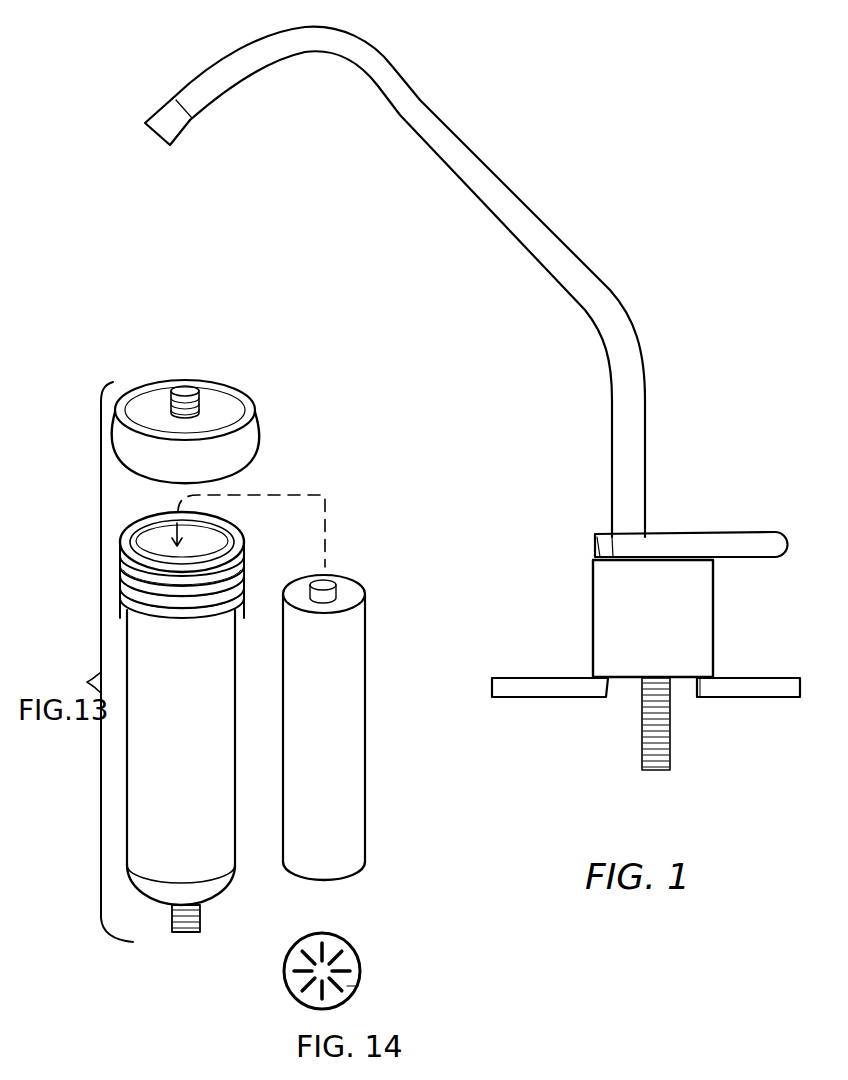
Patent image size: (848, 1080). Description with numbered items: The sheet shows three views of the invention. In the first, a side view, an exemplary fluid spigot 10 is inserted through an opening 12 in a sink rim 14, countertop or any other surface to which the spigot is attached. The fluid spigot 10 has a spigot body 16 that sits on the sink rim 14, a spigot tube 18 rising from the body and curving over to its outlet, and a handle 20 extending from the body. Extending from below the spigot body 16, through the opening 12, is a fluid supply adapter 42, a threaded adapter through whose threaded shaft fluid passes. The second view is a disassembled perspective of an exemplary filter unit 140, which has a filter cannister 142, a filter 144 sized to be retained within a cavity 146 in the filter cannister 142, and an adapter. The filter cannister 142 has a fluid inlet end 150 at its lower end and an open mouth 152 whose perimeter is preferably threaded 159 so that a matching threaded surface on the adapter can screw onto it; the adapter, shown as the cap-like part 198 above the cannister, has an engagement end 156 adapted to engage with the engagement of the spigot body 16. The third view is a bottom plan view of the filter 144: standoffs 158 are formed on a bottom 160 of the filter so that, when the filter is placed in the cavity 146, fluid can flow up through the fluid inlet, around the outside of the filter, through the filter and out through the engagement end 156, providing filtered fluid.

In FIG. 1, the fluid spigot 10 is at (474, 409).
In FIG. 1, the opening 12 is at (692, 707).
In FIG. 1, the sink rim 14 is at (533, 677).
In FIG. 1, the spigot body 16 is at (700, 613).
In FIG. 1, the spigot tube 18 is at (620, 335).
In FIG. 1, the handle 20 is at (705, 545).
In FIG. 1, the fluid supply adapter 42 is at (670, 760).
In FIG. 13, the filter unit 140 is at (84, 662).
In FIG. 13, the filter cannister 142 is at (160, 770).
In FIG. 13, the filter 144 is at (320, 797).
In FIG. 14, the filter 144 is at (276, 992).
In FIG. 13, the cavity 146 is at (215, 545).
In FIG. 13, the fluid inlet end 150 is at (182, 932).
In FIG. 13, the open mouth 152 is at (153, 543).
In FIG. 13, the engagement end 156 is at (203, 397).
In FIG. 14, the standoffs 158 is at (348, 957).
In FIG. 13, the housing threads 159 is at (238, 552).
In FIG. 14, the bottom 160 is at (347, 986).
In FIG. 13, the housing cap 198 is at (250, 427).